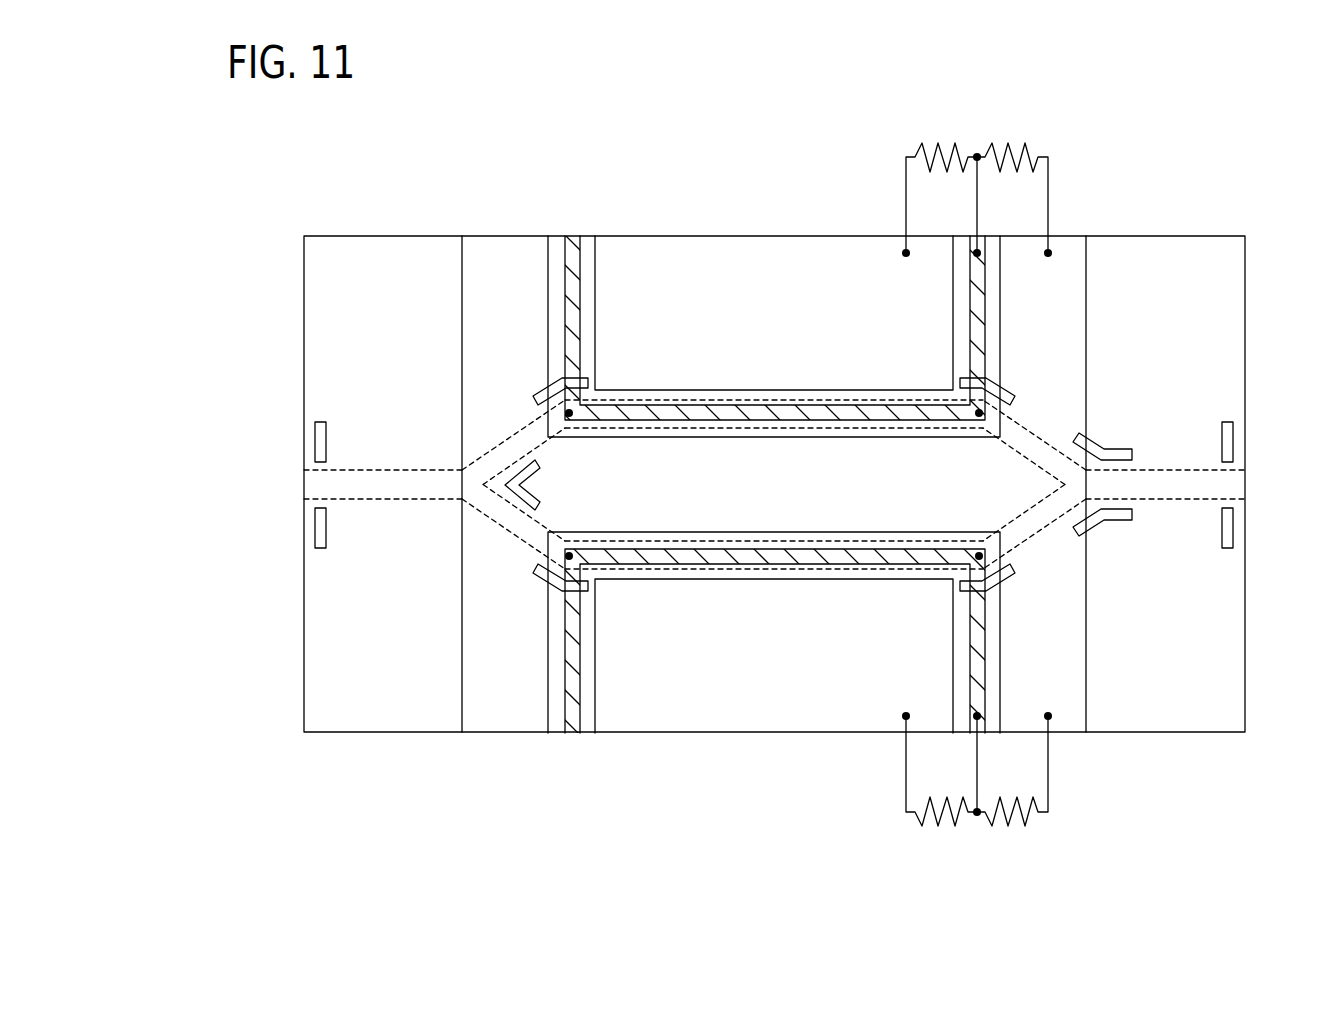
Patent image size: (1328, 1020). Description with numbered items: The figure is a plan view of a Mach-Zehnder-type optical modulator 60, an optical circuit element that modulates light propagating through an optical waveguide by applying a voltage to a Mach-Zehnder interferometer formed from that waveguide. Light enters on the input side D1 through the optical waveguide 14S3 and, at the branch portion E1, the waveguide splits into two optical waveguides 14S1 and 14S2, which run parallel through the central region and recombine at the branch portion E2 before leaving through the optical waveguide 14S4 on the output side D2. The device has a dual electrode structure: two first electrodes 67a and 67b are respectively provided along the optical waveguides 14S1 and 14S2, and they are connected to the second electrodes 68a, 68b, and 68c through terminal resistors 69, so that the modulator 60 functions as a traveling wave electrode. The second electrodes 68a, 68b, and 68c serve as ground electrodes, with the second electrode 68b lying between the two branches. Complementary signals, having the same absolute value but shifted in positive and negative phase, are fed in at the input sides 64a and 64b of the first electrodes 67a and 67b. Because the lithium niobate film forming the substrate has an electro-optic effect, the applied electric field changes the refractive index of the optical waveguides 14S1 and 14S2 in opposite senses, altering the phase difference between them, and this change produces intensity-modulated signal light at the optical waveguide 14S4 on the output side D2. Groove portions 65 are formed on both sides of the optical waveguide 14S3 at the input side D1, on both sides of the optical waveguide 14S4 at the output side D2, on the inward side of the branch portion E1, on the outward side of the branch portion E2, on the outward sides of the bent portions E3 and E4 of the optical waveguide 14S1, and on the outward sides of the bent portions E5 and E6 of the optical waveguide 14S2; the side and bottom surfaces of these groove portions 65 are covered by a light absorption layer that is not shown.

The optical modulator 60 is at (774, 405).
The input side of first electrode 64a is at (785, 303).
The input side of first electrode 64b is at (785, 671).
The groove portion 65 is at (773, 485).
The first electrode 67a is at (746, 305).
The first electrode 67b is at (746, 664).
The second electrode 68a is at (774, 281).
The second electrode 68b is at (509, 443).
The second electrode 68c is at (774, 688).
The terminal resistor 69 is at (977, 485).
The optical waveguide 14S1 is at (774, 300).
The optical waveguide 14S2 is at (774, 669).
The optical waveguide 14S3 is at (383, 534).
The optical waveguide 14S4 is at (1165, 534).
The input side D1 is at (349, 486).
The output side D2 is at (1197, 486).
The branch portion E1 is at (477, 484).
The branch portion E2 is at (1090, 484).
The bent portion E3 is at (601, 442).
The bent portion E4 is at (945, 442).
The bent portion E5 is at (601, 527).
The bent portion E6 is at (945, 527).